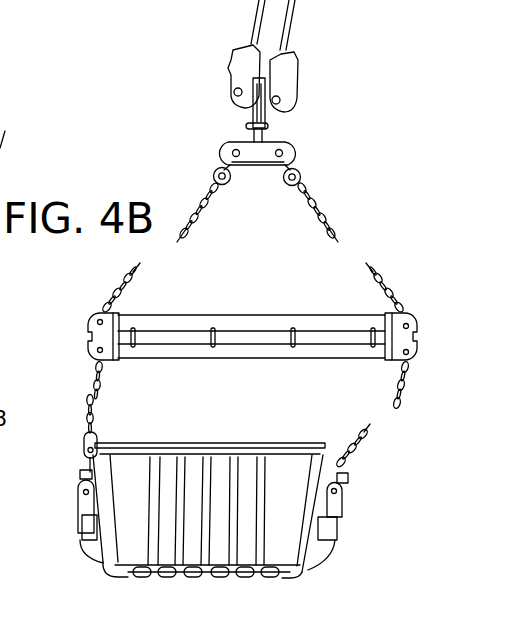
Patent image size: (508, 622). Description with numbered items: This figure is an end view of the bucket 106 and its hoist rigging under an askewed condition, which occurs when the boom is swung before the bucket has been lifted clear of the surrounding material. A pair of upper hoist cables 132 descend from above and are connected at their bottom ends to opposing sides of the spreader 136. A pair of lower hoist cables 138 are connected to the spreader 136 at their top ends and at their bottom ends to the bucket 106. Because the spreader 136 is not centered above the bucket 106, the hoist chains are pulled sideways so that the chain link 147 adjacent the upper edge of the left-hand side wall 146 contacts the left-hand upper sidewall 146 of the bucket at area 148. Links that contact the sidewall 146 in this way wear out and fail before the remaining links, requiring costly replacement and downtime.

The bucket 106 is at (218, 533).
The upper hoist cables 132 is at (330, 206).
The spreader 136 is at (207, 323).
The lower hoist cables 138 is at (392, 398).
The sidewall 146 is at (80, 480).
The chain link 147 is at (84, 442).
The area 148 is at (100, 440).